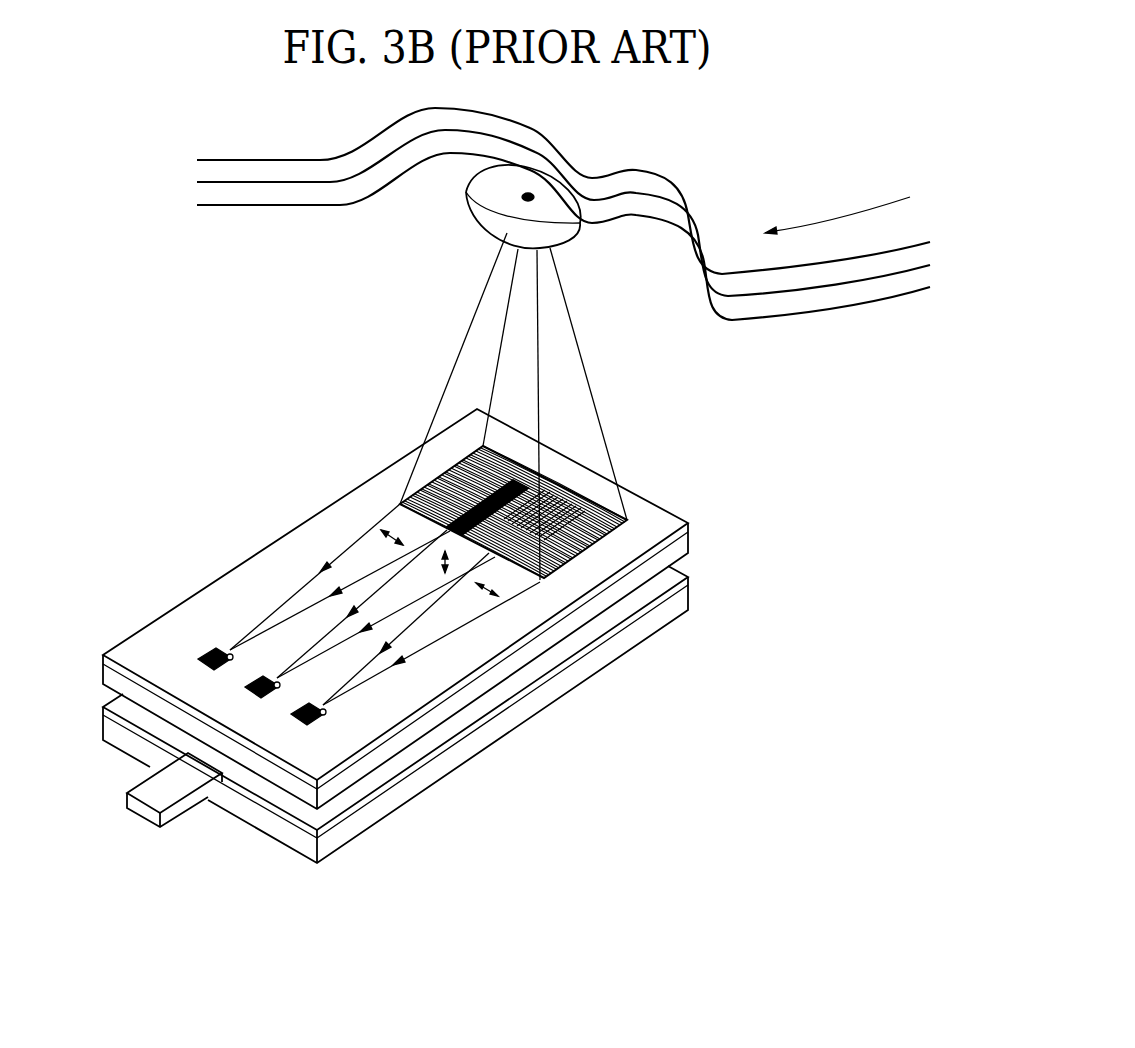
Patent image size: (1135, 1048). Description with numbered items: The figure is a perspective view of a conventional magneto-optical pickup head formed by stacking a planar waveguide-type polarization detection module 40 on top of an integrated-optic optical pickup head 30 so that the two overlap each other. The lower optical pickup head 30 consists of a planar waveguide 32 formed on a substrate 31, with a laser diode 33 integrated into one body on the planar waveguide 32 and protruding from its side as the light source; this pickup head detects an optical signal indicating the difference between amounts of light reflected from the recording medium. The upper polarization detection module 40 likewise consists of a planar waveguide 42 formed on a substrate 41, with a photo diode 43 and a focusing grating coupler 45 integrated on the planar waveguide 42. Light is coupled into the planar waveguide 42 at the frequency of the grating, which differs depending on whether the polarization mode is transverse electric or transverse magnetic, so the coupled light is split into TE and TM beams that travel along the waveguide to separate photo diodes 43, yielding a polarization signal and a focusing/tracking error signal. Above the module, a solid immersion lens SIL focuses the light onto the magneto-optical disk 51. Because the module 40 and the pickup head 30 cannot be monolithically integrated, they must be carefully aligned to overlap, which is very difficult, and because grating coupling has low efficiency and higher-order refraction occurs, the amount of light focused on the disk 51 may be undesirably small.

The magneto-optical disk 51 is at (748, 175).
The solid immersion lens SIL is at (500, 207).
The polarization detection module 40 is at (433, 596).
The substrate 41 is at (508, 667).
The planar waveguide 42 is at (567, 612).
The photo diode 43 is at (317, 720).
The focusing grating coupler 45 is at (450, 470).
The optical pickup head 30 is at (425, 711).
The substrate 31 is at (342, 833).
The planar waveguide 32 is at (377, 795).
The laser diode 33 is at (142, 812).